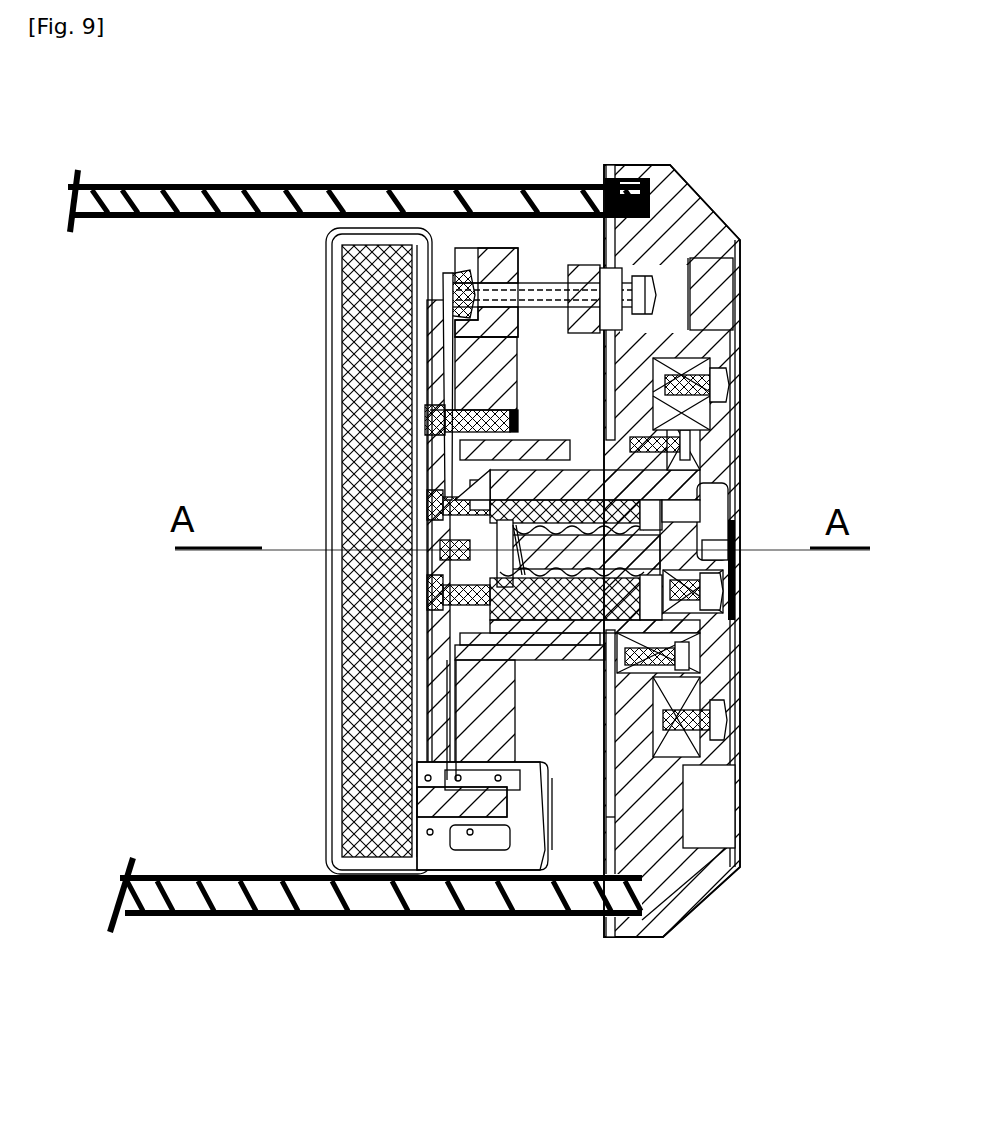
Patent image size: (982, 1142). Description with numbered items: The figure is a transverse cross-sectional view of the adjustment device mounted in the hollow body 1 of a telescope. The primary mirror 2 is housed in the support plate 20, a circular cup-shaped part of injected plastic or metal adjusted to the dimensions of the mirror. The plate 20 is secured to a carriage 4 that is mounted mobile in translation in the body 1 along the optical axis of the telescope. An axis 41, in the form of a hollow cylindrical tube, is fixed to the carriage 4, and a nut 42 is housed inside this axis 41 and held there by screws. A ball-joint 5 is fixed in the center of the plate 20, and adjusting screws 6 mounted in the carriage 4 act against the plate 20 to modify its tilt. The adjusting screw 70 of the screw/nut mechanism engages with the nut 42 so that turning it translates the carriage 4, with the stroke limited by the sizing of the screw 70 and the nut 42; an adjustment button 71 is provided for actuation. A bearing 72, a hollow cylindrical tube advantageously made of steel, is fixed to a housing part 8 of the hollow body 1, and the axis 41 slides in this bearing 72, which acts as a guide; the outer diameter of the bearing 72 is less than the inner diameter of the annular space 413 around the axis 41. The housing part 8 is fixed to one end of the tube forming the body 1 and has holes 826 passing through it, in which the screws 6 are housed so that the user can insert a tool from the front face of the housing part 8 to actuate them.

The hollow body 1 is at (228, 186).
The primary mirror 2 is at (345, 300).
The carriage 4 is at (492, 250).
The ball-joint 5 is at (410, 600).
The adjusting screw 6 is at (655, 268).
The housing part 8 is at (690, 208).
The support plate 20 is at (432, 832).
The axis 41 is at (595, 490).
The nut 42 is at (610, 590).
The adjusting screw 70 is at (650, 540).
The adjustment button 71 is at (715, 412).
The bearing 72 is at (590, 630).
The annular space 413 is at (475, 490).
The holes 826 is at (742, 290).